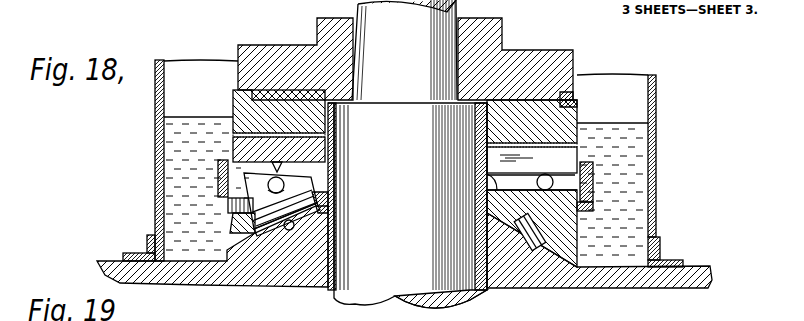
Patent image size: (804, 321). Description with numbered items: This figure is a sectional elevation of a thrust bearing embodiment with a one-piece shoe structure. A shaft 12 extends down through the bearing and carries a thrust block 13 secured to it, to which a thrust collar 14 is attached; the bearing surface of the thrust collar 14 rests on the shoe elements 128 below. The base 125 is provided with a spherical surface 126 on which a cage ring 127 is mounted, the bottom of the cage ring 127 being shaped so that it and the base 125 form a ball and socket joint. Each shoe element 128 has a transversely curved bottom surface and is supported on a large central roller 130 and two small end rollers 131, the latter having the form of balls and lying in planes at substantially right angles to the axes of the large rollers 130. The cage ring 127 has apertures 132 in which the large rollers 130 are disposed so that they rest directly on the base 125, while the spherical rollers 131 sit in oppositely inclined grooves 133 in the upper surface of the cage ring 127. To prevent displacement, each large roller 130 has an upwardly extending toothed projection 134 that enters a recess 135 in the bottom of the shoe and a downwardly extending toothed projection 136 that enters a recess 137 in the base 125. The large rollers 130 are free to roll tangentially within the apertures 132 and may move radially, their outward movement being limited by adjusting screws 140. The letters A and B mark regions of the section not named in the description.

The shaft 12 is at (453, 5).
The thrust block 13 is at (343, 59).
The thrust collar 14 is at (577, 108).
The base 125 is at (560, 282).
The spherical surface 126 is at (550, 247).
The cage ring 127 is at (580, 235).
The shoe elements 128 is at (580, 153).
The large central roller 130 is at (338, 206).
The small end rollers 131 is at (583, 178).
The apertures 132 is at (233, 222).
The grooves 133 is at (578, 210).
The upwardly extending toothed projection 134 is at (340, 174).
The recess 135 is at (310, 150).
The downwardly extending toothed projection 136 is at (300, 223).
The recess 137 is at (288, 231).
The adjusting screws 140 is at (228, 205).
The liquid A is at (233, 147).
The inner block B is at (233, 107).